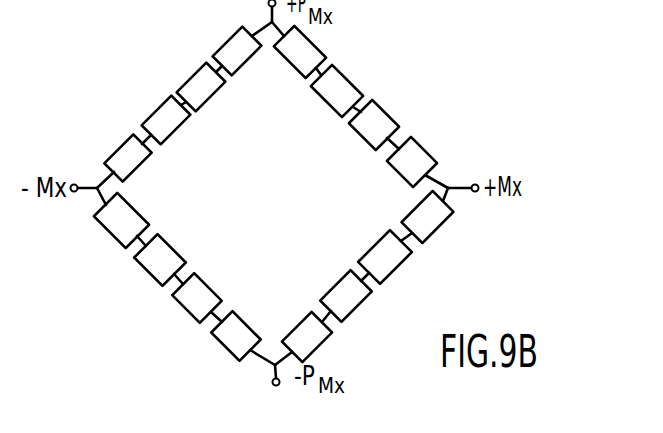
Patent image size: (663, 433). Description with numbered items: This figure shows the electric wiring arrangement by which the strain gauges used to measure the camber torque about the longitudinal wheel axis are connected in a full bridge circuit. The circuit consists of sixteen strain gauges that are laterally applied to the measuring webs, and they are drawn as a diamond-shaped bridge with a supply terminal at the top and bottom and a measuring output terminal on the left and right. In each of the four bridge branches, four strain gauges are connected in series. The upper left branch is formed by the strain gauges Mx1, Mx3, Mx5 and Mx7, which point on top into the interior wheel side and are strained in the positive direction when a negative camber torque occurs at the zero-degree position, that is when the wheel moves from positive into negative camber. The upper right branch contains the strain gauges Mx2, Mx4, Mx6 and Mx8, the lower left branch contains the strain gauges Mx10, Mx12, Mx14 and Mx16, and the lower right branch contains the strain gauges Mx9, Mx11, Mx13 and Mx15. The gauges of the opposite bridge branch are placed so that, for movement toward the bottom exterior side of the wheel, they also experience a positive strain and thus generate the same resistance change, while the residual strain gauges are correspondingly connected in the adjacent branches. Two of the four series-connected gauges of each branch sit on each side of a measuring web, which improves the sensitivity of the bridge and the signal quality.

The strain gauge Mx1 is at (131, 156).
The strain gauge Mx2 is at (302, 44).
The strain gauge Mx3 is at (170, 116).
The strain gauge Mx4 is at (333, 80).
The strain gauge Mx5 is at (198, 83).
The strain gauge Mx6 is at (372, 118).
The strain gauge Mx7 is at (231, 50).
The strain gauge Mx8 is at (405, 153).
The strain gauge Mx9 is at (312, 340).
The strain gauge Mx10 is at (114, 222).
The strain gauge Mx11 is at (352, 302).
The strain gauge Mx12 is at (149, 264).
The strain gauge Mx13 is at (386, 265).
The strain gauge Mx14 is at (184, 299).
The strain gauge Mx15 is at (434, 221).
The strain gauge Mx16 is at (233, 338).